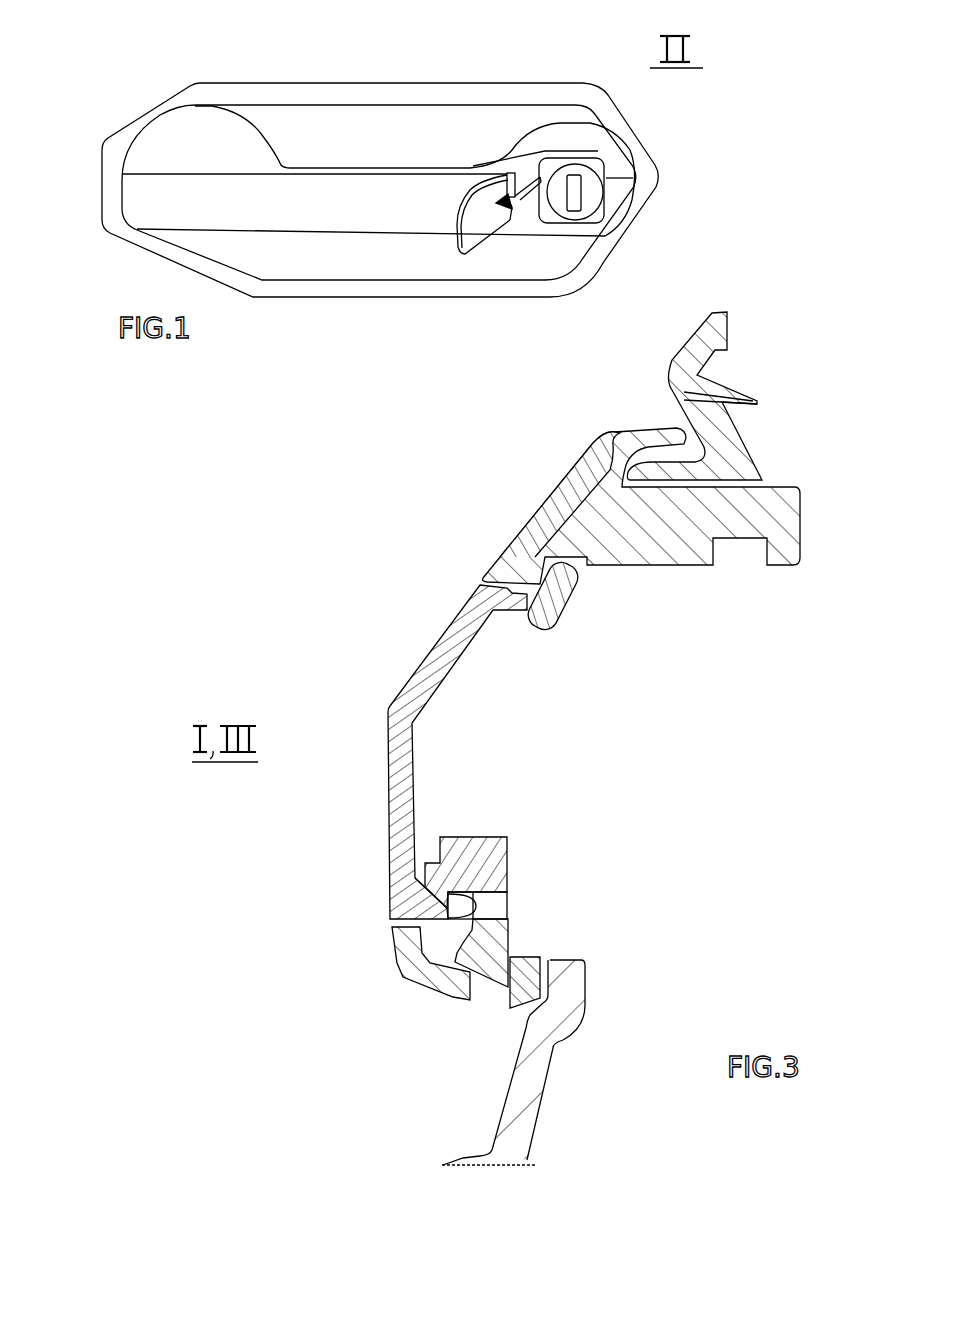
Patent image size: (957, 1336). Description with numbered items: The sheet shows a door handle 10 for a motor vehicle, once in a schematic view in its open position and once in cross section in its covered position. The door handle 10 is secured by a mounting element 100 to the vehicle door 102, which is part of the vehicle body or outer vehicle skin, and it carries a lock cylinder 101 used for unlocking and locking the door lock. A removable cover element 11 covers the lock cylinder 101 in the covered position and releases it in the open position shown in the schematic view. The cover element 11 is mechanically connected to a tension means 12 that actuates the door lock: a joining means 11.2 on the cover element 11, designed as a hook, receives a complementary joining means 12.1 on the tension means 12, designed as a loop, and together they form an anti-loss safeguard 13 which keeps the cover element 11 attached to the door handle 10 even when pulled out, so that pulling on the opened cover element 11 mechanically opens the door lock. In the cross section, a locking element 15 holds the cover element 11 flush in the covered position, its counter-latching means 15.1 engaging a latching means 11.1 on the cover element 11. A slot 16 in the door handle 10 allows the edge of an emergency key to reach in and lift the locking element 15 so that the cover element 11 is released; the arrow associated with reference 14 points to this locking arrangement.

In FIG. 1, the mounting element 100 is at (170, 105).
In FIG. 3, the mounting element 100 is at (775, 520).
In FIG. 1, the door handle 10 is at (167, 153).
In FIG. 3, the door handle 10 is at (532, 543).
In FIG. 1, the cover element 11 is at (478, 218).
In FIG. 3, the cover element 11 is at (423, 680).
In FIG. 3, the latching means 11.1 is at (539, 885).
In FIG. 1, the joining means 11.2 is at (490, 208).
In FIG. 1, the tension means 12 is at (515, 175).
In FIG. 3, the tension means 12 is at (553, 596).
In FIG. 1, the complementary joining means 12.1 is at (512, 210).
In FIG. 1, the anti-loss safeguard 13 is at (536, 284).
In FIG. 3, the locking device 14 is at (535, 815).
In FIG. 3, the locking element 15 is at (490, 865).
In FIG. 3, the counter-latching means 15.1 is at (442, 908).
In FIG. 3, the slot 16 is at (477, 1012).
In FIG. 1, the lock cylinder 101 is at (590, 193).
In FIG. 3, the vehicle door 102 is at (535, 1095).